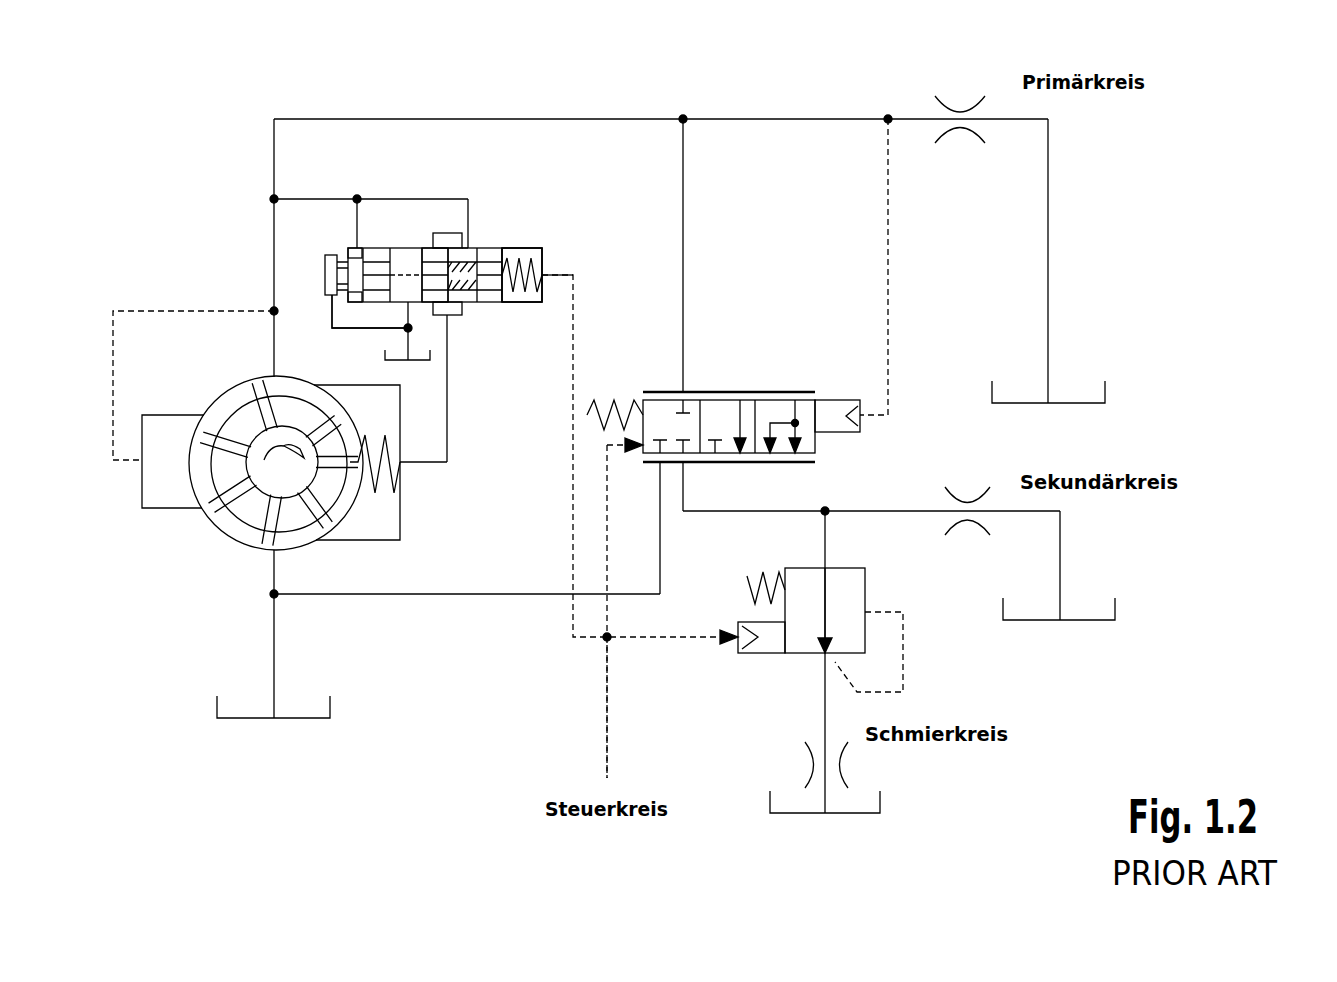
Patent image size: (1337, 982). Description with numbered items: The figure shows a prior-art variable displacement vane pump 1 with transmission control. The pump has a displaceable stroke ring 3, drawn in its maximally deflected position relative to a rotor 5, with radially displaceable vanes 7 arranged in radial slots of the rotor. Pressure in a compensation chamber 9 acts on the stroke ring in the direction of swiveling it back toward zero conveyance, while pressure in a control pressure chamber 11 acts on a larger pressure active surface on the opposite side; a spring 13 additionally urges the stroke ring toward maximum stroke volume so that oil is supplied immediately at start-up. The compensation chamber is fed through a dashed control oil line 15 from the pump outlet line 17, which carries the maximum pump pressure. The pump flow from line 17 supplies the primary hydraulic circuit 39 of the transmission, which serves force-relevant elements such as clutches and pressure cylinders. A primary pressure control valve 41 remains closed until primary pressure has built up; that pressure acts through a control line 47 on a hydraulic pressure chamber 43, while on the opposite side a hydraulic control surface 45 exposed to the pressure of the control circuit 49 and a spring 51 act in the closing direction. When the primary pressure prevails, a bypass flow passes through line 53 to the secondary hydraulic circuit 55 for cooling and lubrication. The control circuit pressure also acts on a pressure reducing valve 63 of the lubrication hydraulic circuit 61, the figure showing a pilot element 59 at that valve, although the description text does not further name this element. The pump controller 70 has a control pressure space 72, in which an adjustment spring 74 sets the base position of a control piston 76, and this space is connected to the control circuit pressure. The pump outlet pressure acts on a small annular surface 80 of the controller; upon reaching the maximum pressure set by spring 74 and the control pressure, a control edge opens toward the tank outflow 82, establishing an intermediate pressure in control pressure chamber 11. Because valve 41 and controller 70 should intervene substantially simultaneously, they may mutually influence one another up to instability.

The vane pump 1 is at (284, 364).
The stroke ring 3 is at (215, 530).
The rotor 5 is at (250, 512).
The vanes 7 is at (215, 495).
The compensation chamber 9 is at (167, 440).
The control pressure chamber 11 is at (385, 525).
The spring 13 is at (395, 490).
The control oil line 15 is at (150, 311).
The pump outlet line 17 is at (273, 345).
The primary hydraulic circuit 39 is at (960, 110).
The primary pressure control valve 41 is at (730, 392).
The hydraulic pressure chamber 43 is at (825, 418).
The hydraulic control surface 45 is at (640, 400).
The control line 47 is at (888, 288).
The control circuit 49 is at (608, 765).
The spring 51 is at (600, 400).
The line 53 is at (683, 288).
The secondary hydraulic circuit 55 is at (967, 503).
The pilot control of pressure valve 59 is at (720, 630).
The lubrication hydraulic circuit 61 is at (838, 765).
The pressure reducing valve 63 is at (788, 688).
The pump controller 70 is at (500, 222).
The control pressure space 72 is at (520, 292).
The adjustment spring 74 is at (532, 265).
The control piston 76 is at (430, 262).
The annular surface 80 is at (358, 255).
The tank outflow 82 is at (350, 330).